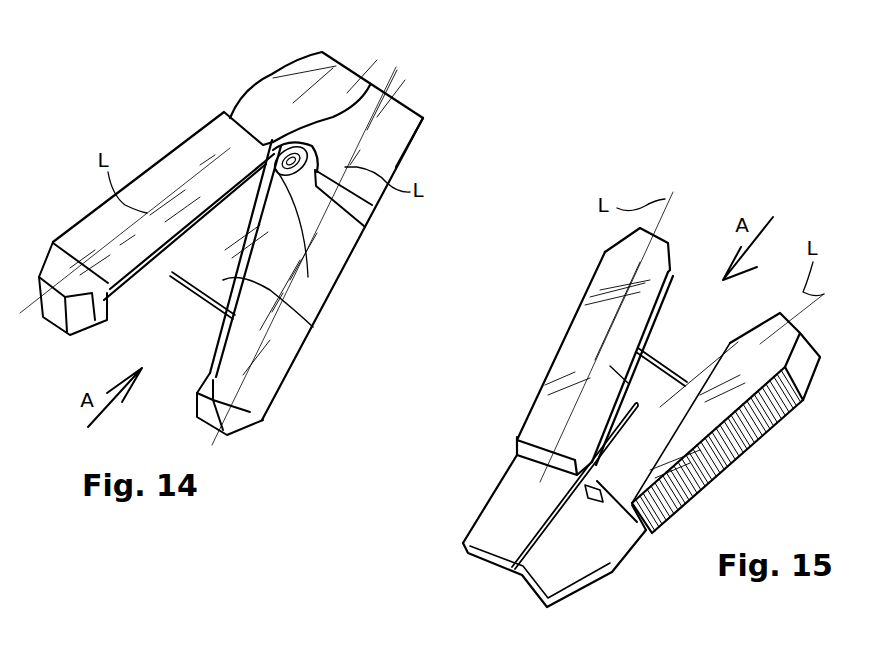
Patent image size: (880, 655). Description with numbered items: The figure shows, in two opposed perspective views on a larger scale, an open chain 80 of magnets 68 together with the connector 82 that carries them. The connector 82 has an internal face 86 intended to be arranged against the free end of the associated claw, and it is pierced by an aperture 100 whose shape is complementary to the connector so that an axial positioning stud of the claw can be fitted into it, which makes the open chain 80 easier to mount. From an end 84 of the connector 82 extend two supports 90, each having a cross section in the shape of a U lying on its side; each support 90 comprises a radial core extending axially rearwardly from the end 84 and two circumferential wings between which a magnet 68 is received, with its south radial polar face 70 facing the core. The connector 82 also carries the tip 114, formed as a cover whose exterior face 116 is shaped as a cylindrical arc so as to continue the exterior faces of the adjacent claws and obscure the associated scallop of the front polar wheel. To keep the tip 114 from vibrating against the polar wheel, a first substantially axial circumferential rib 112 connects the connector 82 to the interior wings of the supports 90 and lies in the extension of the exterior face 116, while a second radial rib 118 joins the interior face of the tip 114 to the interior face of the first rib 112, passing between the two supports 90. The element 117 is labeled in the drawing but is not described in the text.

In FIG. 14, the magnet 68 is at (126, 300).
In FIG. 15, the magnet 68 is at (678, 298).
In FIG. 14, the south radial polar face 70 is at (150, 277).
In FIG. 15, the south radial polar face 70 is at (641, 345).
In FIG. 14, the open chain 80 is at (458, 134).
In FIG. 15, the open chain 80 is at (532, 331).
In FIG. 14, the connector 82 is at (280, 115).
In FIG. 15, the connector 82 is at (595, 502).
In FIG. 14, the end of the connector 84 is at (371, 84).
In FIG. 14, the internal face 86 is at (308, 277).
In FIG. 14, the support 90 is at (163, 176).
In FIG. 15, the support 90 is at (580, 336).
In FIG. 14, the aperture 100 is at (370, 222).
In FIG. 14, the first substantially axial circumferential rib 112 is at (313, 327).
In FIG. 15, the first substantially axial circumferential rib 112 is at (610, 366).
In FIG. 14, the tip 114 is at (395, 120).
In FIG. 15, the tip 114 is at (507, 525).
In FIG. 14, the exterior face 116 is at (307, 96).
In FIG. 14, the side edge 117 is at (422, 112).
In FIG. 15, the side edge 117 is at (482, 563).
In FIG. 15, the second radial rib 118 is at (548, 535).